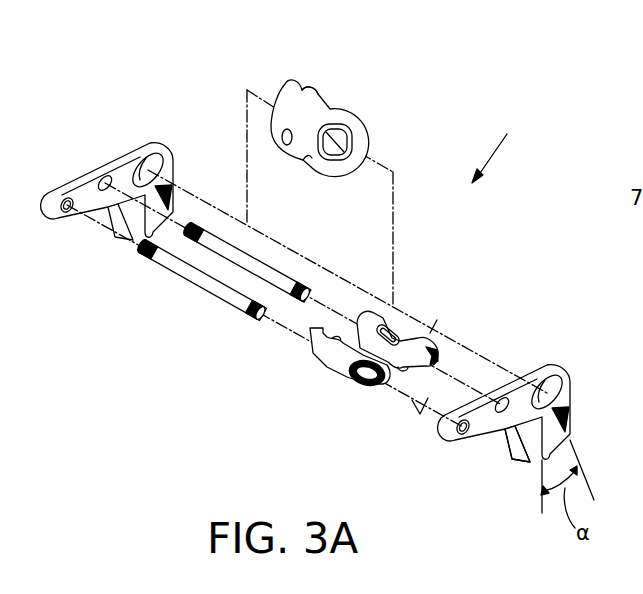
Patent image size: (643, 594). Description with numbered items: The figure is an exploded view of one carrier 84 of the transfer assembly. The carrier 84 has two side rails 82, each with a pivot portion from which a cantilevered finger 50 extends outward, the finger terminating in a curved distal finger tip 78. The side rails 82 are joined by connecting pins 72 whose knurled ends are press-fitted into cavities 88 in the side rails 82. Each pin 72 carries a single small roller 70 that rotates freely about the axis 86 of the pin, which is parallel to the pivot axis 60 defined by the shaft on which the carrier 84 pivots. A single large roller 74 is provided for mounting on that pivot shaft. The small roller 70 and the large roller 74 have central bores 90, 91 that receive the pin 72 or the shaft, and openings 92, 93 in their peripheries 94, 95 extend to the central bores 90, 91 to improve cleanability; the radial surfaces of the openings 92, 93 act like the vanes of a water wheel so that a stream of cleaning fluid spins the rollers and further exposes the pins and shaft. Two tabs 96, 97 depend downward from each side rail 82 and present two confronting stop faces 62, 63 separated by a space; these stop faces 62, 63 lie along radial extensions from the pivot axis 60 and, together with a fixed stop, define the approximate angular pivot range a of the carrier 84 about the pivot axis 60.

The cantilevered finger 50 is at (480, 432).
The pivot axis 60 is at (447, 310).
The stop face 62 is at (152, 236).
The stop face 63 is at (165, 208).
The small roller 70 is at (320, 357).
The connecting pin 72 is at (213, 290).
The large roller 74 is at (287, 93).
The distal finger tip 78 is at (57, 212).
The side rail 82 is at (140, 142).
The carrier 84 is at (503, 150).
The axis of the pin 86 is at (413, 404).
The cavity 88 is at (70, 207).
The central bore 90 is at (365, 386).
The central bore 91 is at (358, 143).
The opening 92 is at (333, 97).
The opening 93 is at (290, 152).
The periphery 94 is at (377, 313).
The periphery 95 is at (307, 158).
The tab 96 is at (527, 458).
The tab 97 is at (570, 418).